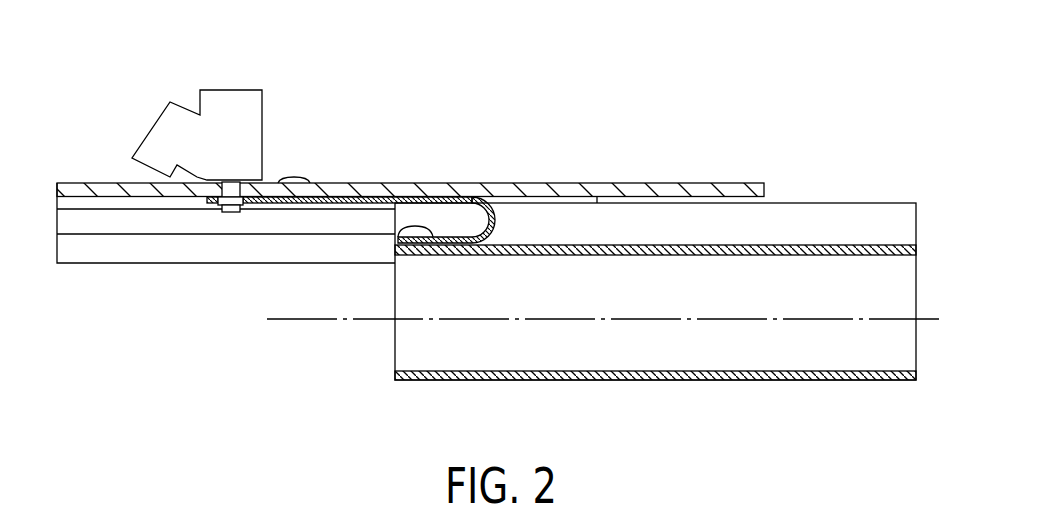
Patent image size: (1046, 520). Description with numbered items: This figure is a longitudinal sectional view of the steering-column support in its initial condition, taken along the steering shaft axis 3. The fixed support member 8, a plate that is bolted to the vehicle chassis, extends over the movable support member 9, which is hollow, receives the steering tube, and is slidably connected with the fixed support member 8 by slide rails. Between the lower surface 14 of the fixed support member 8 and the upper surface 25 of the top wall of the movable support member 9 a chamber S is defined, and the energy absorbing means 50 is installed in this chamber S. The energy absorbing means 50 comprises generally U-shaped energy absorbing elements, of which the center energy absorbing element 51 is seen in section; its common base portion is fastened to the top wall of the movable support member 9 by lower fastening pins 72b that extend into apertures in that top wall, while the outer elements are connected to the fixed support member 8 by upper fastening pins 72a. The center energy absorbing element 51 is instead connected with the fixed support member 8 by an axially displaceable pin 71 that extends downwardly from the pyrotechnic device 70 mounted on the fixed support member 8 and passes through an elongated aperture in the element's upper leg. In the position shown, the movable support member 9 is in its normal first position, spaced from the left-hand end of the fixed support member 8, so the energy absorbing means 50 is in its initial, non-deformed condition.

The steering shaft axis 3 is at (323, 320).
The fixed support member 8 is at (661, 181).
The movable support member 9 is at (864, 200).
The lower surface 14 is at (597, 203).
The upper surface 25 is at (796, 245).
The energy absorbing means 50 is at (507, 222).
The center energy absorbing element 51 is at (325, 204).
The pyrotechnic device 70 is at (243, 87).
The axially displaceable pin 71 is at (232, 213).
The upper fastening pins 72a is at (298, 178).
The lower fastening pins 72b is at (397, 236).
The chamber S is at (542, 230).